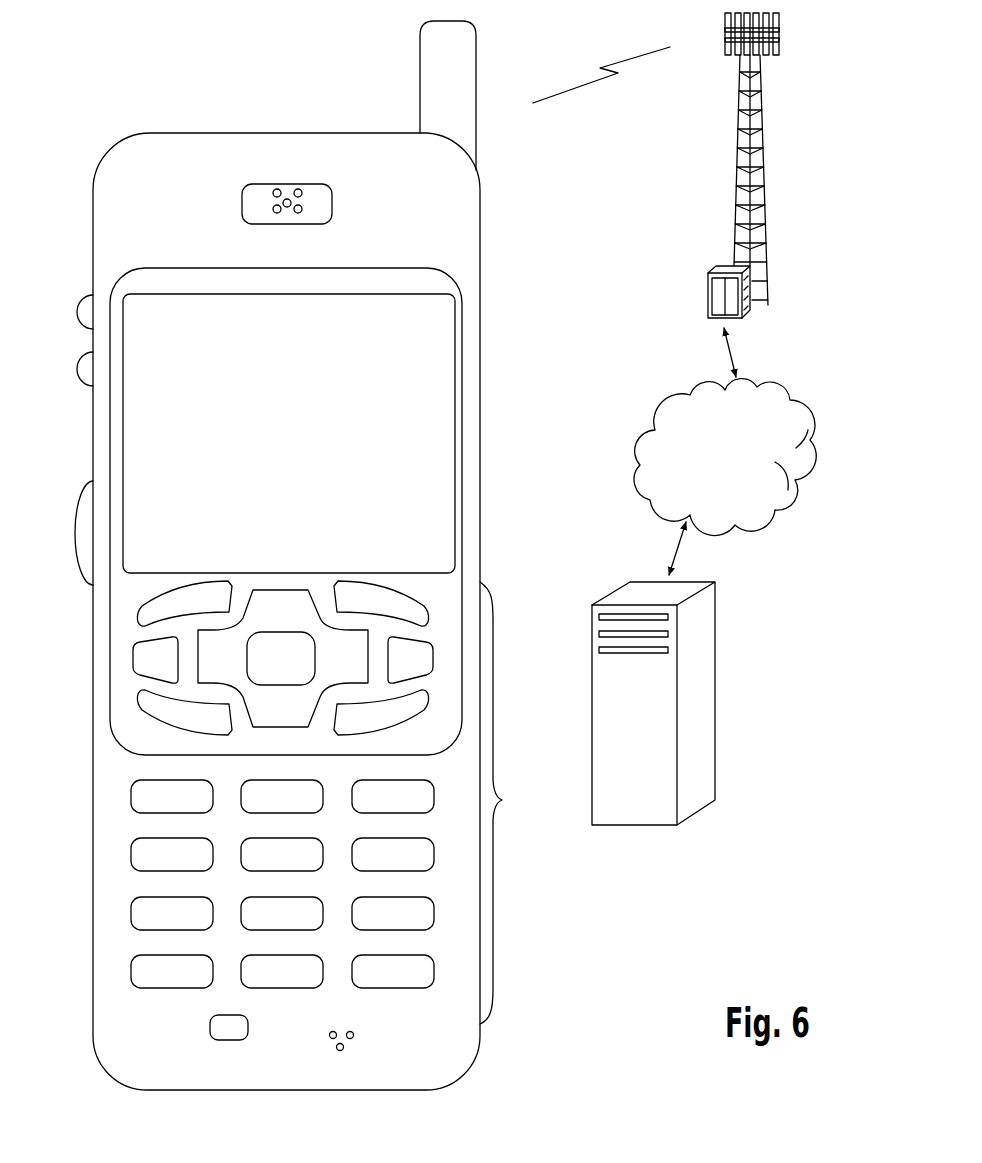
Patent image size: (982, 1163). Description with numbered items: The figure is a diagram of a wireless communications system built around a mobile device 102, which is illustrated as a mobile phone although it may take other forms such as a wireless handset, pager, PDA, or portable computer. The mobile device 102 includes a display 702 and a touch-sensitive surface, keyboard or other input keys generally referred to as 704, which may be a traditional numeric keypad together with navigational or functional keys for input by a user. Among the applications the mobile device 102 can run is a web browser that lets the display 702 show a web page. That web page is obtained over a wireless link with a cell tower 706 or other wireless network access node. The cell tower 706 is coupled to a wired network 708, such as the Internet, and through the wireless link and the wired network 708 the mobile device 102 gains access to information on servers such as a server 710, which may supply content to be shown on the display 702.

The mobile device 102 is at (94, 1043).
The display 702 is at (455, 308).
The input keys 704 is at (336, 803).
The cell tower 706 is at (737, 180).
The wired network 708 is at (648, 497).
The server 710 is at (632, 826).